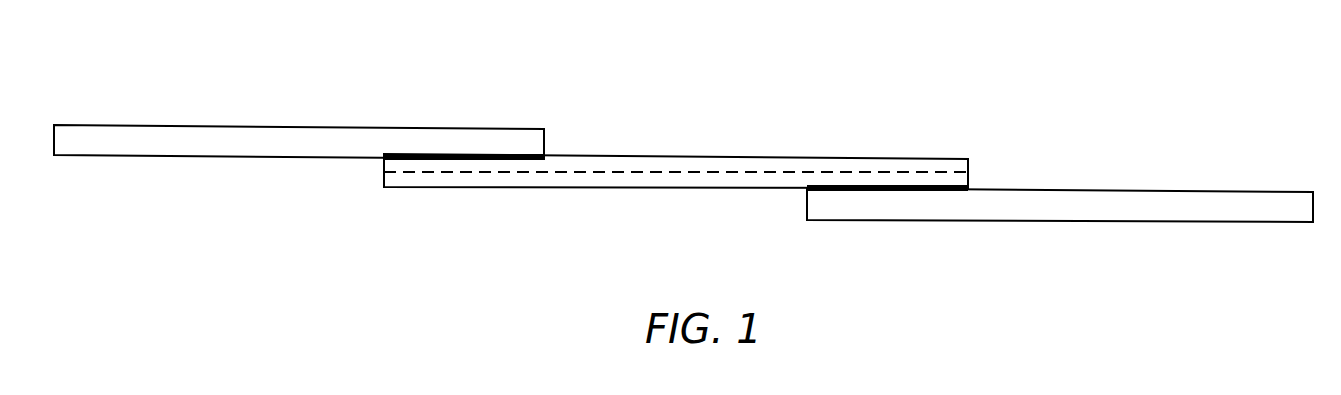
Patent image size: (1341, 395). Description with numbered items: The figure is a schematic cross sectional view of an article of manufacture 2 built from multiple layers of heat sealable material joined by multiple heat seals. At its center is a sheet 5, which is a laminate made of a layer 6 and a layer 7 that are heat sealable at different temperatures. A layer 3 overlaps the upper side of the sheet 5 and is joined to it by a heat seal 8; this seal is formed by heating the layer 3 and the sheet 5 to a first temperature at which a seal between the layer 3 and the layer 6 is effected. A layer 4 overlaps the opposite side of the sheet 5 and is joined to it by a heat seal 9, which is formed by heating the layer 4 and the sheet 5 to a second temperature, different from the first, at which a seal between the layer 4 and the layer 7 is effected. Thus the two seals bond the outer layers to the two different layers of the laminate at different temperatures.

The article of manufacture 2 is at (628, 66).
The layer 3 is at (233, 133).
The layer 4 is at (1130, 190).
The sheet 5 is at (682, 210).
The layer 6 is at (897, 163).
The layer 7 is at (450, 180).
The heat seal 8 is at (508, 153).
The heat seal 9 is at (898, 192).